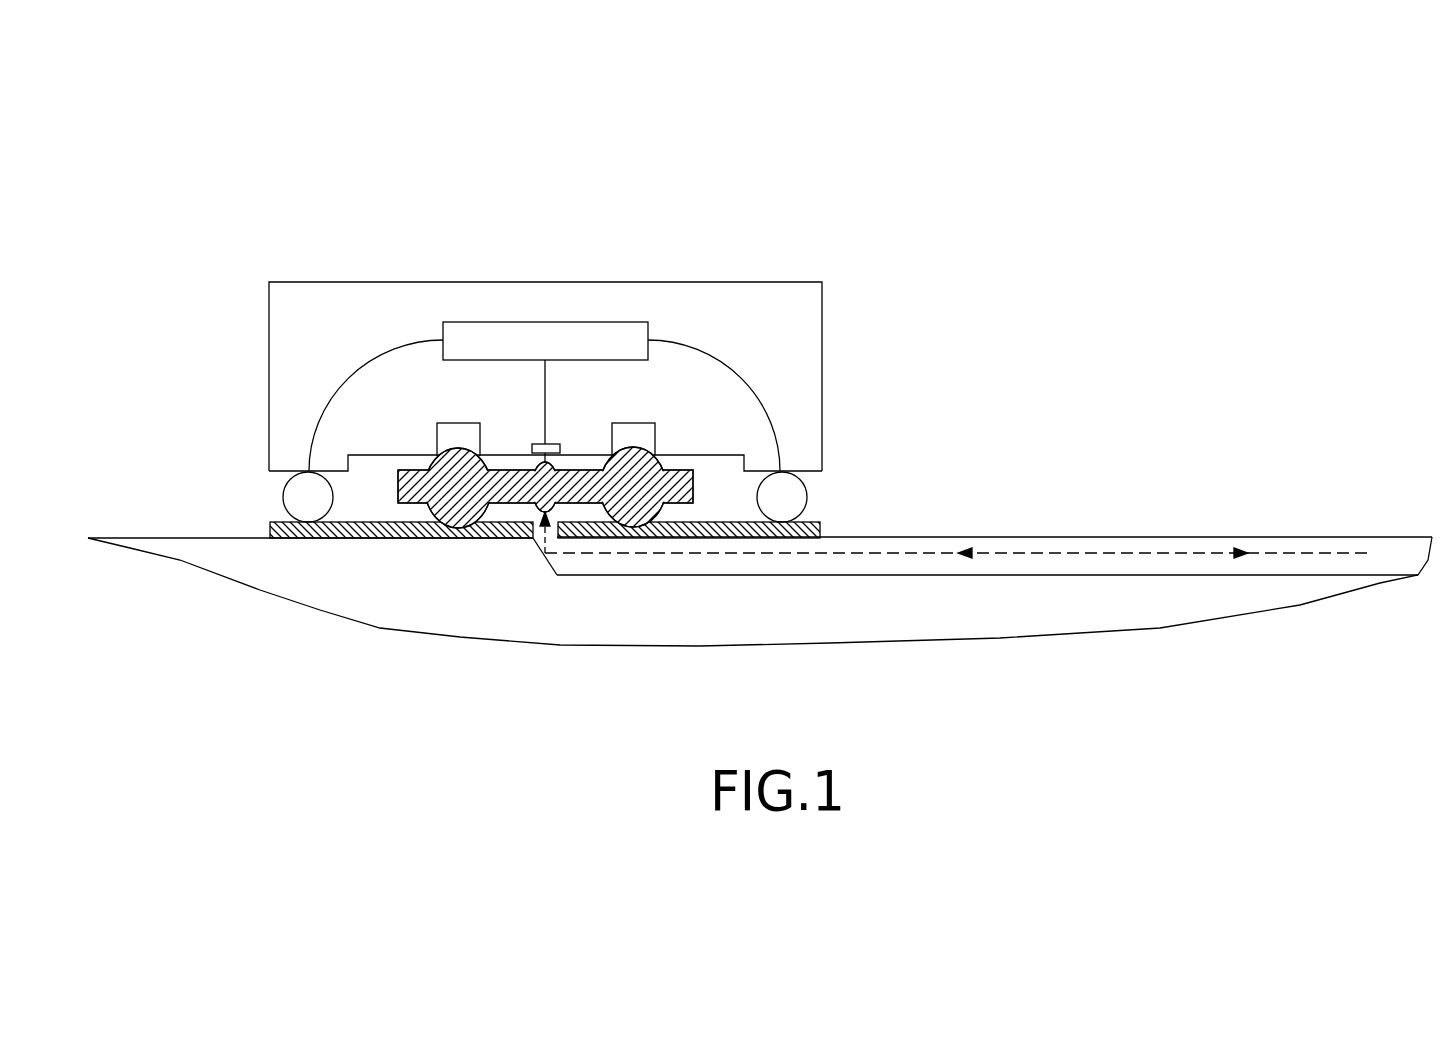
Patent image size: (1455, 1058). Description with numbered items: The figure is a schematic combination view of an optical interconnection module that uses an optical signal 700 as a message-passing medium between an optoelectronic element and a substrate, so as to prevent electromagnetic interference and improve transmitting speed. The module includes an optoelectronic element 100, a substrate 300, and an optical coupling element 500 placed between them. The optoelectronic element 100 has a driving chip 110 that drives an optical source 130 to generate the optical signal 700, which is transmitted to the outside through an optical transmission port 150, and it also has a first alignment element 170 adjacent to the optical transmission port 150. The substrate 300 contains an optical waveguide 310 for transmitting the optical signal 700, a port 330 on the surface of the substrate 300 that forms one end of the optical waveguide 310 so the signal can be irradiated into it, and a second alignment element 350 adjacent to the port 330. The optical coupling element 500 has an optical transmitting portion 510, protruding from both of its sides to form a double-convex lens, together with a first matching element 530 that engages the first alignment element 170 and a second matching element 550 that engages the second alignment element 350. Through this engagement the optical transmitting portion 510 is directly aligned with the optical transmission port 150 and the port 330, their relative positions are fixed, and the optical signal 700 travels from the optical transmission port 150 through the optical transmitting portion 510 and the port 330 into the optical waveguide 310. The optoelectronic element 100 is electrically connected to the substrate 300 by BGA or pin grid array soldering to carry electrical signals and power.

The optoelectronic element 100 is at (298, 243).
The driving chip 110 is at (548, 321).
The optical source 130 is at (553, 444).
The optical transmission port 150 is at (562, 462).
The first alignment element 170 is at (656, 436).
The first matching element 530 is at (653, 452).
The substrate 300 is at (1160, 625).
The optical waveguide 310 is at (1386, 547).
The port 330 is at (540, 545).
The second alignment element 350 is at (445, 538).
The optical coupling element 500 is at (701, 493).
The optical transmitting portion 510 is at (534, 539).
The second matching element 550 is at (633, 528).
The optical signal 700 is at (1012, 548).